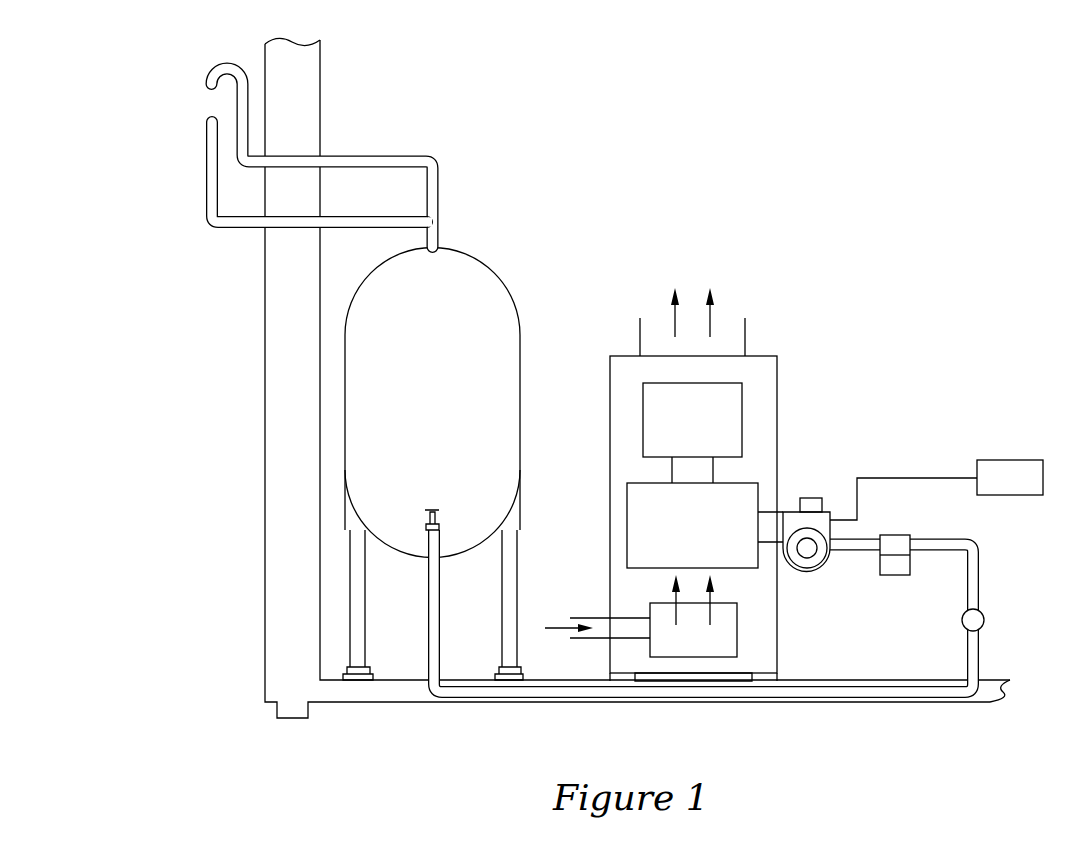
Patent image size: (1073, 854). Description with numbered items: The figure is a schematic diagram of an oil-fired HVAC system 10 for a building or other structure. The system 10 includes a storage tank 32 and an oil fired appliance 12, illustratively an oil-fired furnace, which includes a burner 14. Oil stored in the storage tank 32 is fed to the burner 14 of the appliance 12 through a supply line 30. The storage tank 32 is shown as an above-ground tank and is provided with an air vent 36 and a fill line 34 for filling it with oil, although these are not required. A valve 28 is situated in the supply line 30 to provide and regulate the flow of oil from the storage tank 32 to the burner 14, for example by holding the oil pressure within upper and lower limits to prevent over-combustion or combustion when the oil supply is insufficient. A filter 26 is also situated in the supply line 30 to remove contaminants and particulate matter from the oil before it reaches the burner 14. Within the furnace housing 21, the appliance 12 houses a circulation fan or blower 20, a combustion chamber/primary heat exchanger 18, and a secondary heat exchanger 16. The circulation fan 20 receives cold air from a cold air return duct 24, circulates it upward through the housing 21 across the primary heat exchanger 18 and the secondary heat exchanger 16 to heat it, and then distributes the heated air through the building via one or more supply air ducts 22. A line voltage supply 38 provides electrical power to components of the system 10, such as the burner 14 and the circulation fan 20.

The oil-fired HVAC system 10 is at (910, 143).
The oil fired appliance 12 is at (708, 484).
The burner 14 is at (807, 512).
The secondary heat exchanger 16 is at (643, 402).
The combustion chamber/primary heat exchanger 18 is at (627, 500).
The circulation fan or blower 20 is at (737, 630).
The furnace housing 21 is at (610, 356).
The supply air duct 22 is at (746, 323).
The cold air return duct 24 is at (590, 617).
The filter 26 is at (900, 535).
The valve 28 is at (984, 618).
The supply line 30 is at (978, 578).
The storage tank 32 is at (468, 256).
The fill line 34 is at (208, 125).
The air vent 36 is at (222, 66).
The line voltage supply 38 is at (1010, 460).